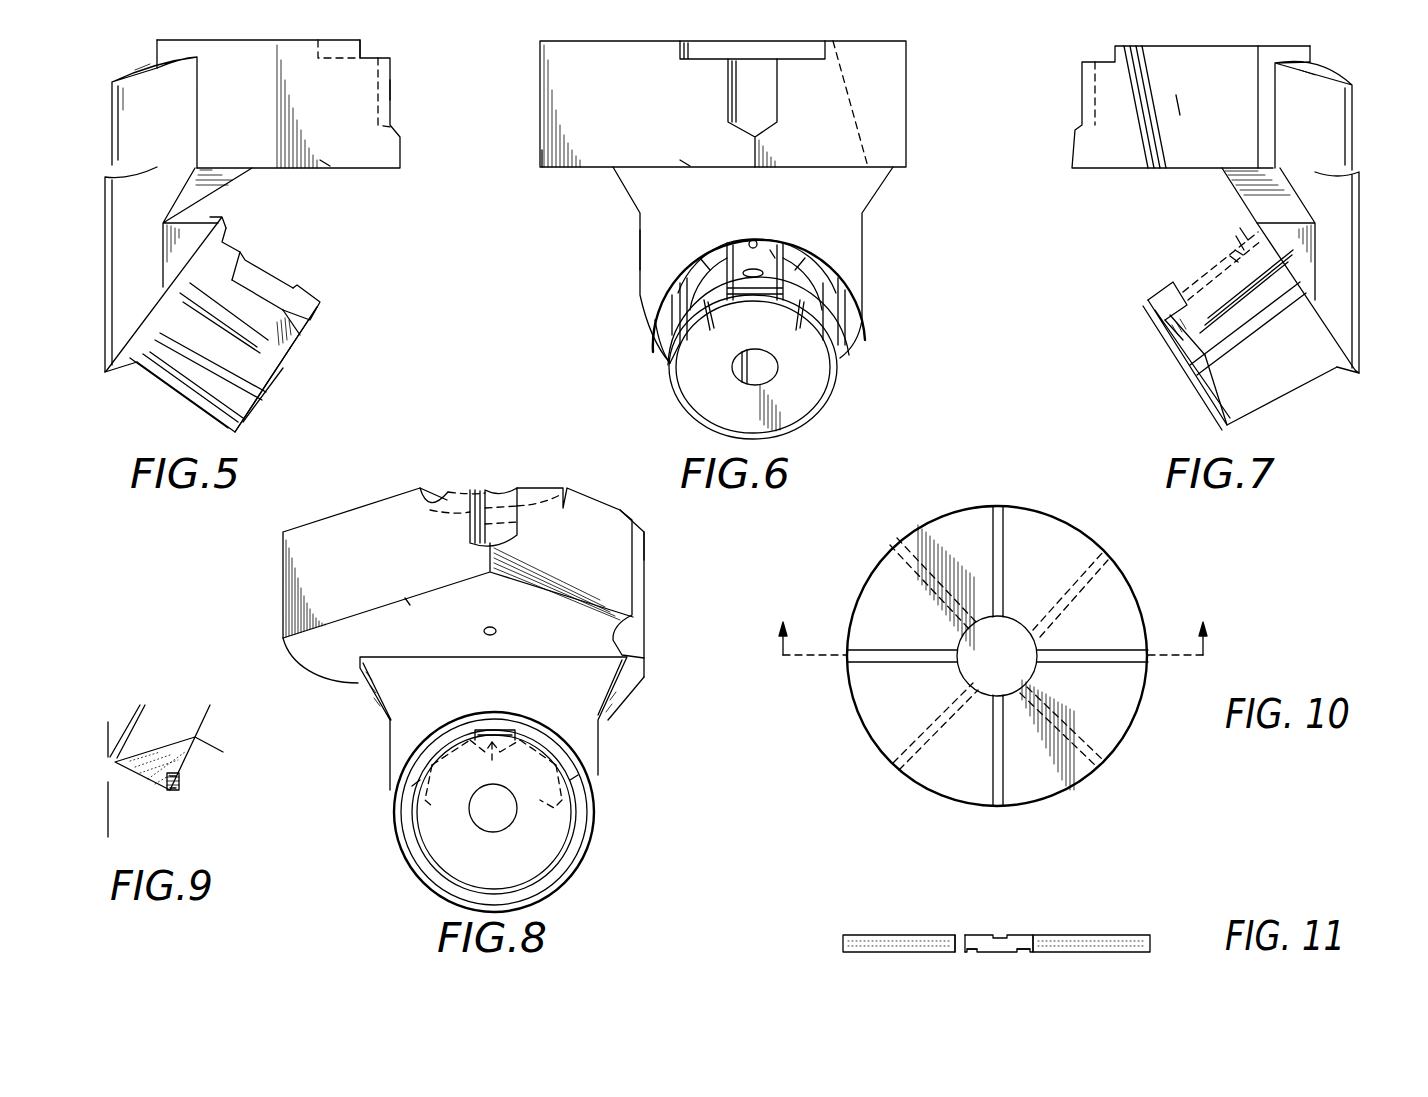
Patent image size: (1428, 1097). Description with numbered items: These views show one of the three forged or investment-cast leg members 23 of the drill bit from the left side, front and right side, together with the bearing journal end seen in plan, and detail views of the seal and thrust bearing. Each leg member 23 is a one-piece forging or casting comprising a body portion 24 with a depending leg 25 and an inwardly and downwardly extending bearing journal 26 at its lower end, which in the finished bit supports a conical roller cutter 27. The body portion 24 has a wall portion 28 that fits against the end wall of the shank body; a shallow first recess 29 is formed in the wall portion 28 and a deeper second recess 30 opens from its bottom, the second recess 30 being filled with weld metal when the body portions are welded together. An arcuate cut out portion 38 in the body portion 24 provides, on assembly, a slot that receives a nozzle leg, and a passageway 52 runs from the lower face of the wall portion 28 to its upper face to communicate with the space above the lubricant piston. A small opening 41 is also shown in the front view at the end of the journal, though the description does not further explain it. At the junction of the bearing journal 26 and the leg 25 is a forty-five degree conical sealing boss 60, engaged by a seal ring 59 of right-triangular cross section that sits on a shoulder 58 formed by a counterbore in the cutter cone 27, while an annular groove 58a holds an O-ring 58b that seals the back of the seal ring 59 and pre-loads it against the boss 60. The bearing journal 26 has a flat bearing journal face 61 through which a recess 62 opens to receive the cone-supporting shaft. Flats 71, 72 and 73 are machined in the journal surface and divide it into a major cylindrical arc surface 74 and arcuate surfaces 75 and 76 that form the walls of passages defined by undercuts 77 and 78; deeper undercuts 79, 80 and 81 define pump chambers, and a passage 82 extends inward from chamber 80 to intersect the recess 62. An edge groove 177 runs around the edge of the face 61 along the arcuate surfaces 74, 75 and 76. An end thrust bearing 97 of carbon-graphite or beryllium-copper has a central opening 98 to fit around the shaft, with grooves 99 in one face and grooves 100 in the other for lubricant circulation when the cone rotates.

In FIG. 5, the leg member 23 is at (347, 181).
In FIG. 6, the leg member 23 is at (506, 189).
In FIG. 7, the leg member 23 is at (1119, 197).
In FIG. 8, the leg member 23 is at (333, 516).
In FIG. 5, the body portion 24 is at (118, 112).
In FIG. 6, the body portion 24 is at (568, 165).
In FIG. 7, the body portion 24 is at (1340, 80).
In FIG. 8, the body portion 24 is at (300, 667).
In FIG. 5, the depending leg 25 is at (112, 255).
In FIG. 6, the depending leg 25 is at (640, 220).
In FIG. 7, the depending leg 25 is at (1359, 272).
In FIG. 8, the depending leg 25 is at (375, 708).
In FIG. 9, the depending leg 25 is at (108, 737).
In FIG. 5, the bearing journal 26 is at (192, 408).
In FIG. 6, the bearing journal 26 is at (672, 326).
In FIG. 7, the bearing journal 26 is at (1298, 405).
In FIG. 8, the bearing journal 26 is at (577, 832).
In FIG. 9, the bearing journal 26 is at (205, 735).
In FIG. 9, the roller cutter cone 27 is at (118, 824).
In FIG. 5, the wall portion 28 is at (300, 170).
In FIG. 6, the wall portion 28 is at (660, 160).
In FIG. 8, the wall portion 28 is at (400, 592).
In FIG. 5, the first recess 29 is at (362, 48).
In FIG. 6, the first recess 29 is at (681, 59).
In FIG. 8, the first recess 29 is at (450, 495).
In FIG. 5, the second recess 30 is at (392, 94).
In FIG. 6, the second recess 30 is at (728, 100).
In FIG. 8, the second recess 30 is at (505, 538).
In FIG. 6, the arcuate cut out portion 38 is at (898, 115).
In FIG. 7, the arcuate cut out portion 38 is at (1168, 168).
In FIG. 8, the arcuate cut out portion 38 is at (635, 508).
In FIG. 6, the small hole 41 is at (752, 240).
In FIG. 8, the passageway 52 is at (496, 629).
In FIG. 9, the shoulder 58 is at (180, 770).
In FIG. 9, the annular groove 58a is at (181, 786).
In FIG. 9, the O-ring 58b is at (172, 792).
In FIG. 9, the seal ring 59 is at (140, 768).
In FIG. 5, the conical sealing boss 60 is at (130, 371).
In FIG. 6, the conical sealing boss 60 is at (835, 253).
In FIG. 7, the conical sealing boss 60 is at (1330, 367).
In FIG. 8, the conical sealing boss 60 is at (555, 875).
In FIG. 9, the conical sealing boss 60 is at (166, 738).
In FIG. 5, the bearing journal face 61 is at (292, 356).
In FIG. 6, the bearing journal face 61 is at (812, 395).
In FIG. 6, the recess 62 is at (745, 385).
In FIG. 8, the recess 62 is at (483, 825).
In FIG. 5, the flat 71 is at (292, 342).
In FIG. 6, the flat 71 is at (683, 345).
In FIG. 8, the flat 71 is at (415, 783).
In FIG. 6, the flat 72 is at (737, 295).
In FIG. 8, the flat 72 is at (490, 730).
In FIG. 6, the flat 73 is at (830, 350).
In FIG. 7, the flat 73 is at (1175, 345).
In FIG. 8, the flat 73 is at (572, 778).
In FIG. 5, the surface 74 is at (218, 386).
In FIG. 6, the surface 74 is at (672, 395).
In FIG. 7, the surface 74 is at (1258, 420).
In FIG. 8, the surface 74 is at (440, 878).
In FIG. 5, the surface 75 is at (232, 252).
In FIG. 6, the surface 75 is at (702, 258).
In FIG. 8, the surface 75 is at (448, 740).
In FIG. 6, the surface 76 is at (808, 258).
In FIG. 7, the surface 76 is at (1160, 295).
In FIG. 8, the surface 76 is at (535, 745).
In FIG. 5, the undercut 77 is at (262, 272).
In FIG. 6, the undercut 77 is at (720, 291).
In FIG. 8, the undercut 77 is at (472, 761).
In FIG. 6, the undercut 78 is at (812, 291).
In FIG. 8, the undercut 78 is at (540, 778).
In FIG. 5, the deeper undercut 79 is at (240, 317).
In FIG. 6, the deeper undercut 79 is at (680, 318).
In FIG. 8, the deeper undercut 79 is at (432, 806).
In FIG. 6, the deeper undercut 80 is at (773, 250).
In FIG. 7, the deeper undercut 80 is at (1235, 280).
In FIG. 8, the deeper undercut 80 is at (499, 758).
In FIG. 7, the deeper undercut 81 is at (1246, 334).
In FIG. 8, the deeper undercut 81 is at (540, 804).
In FIG. 6, the passage 82 is at (753, 280).
In FIG. 10, the end thrust bearing 97 is at (848, 705).
In FIG. 11, the end thrust bearing 97 is at (843, 940).
In FIG. 10, the central opening 98 is at (1013, 697).
In FIG. 11, the central opening 98 is at (962, 935).
In FIG. 10, the grooves 99 is at (997, 532).
In FIG. 11, the grooves 99 is at (1000, 933).
In FIG. 10, the grooves 100 is at (893, 552).
In FIG. 11, the grooves 100 is at (920, 952).
In FIG. 5, the edge groove 177 is at (262, 390).
In FIG. 7, the edge groove 177 is at (1210, 390).
In FIG. 8, the edge groove 177 is at (573, 815).